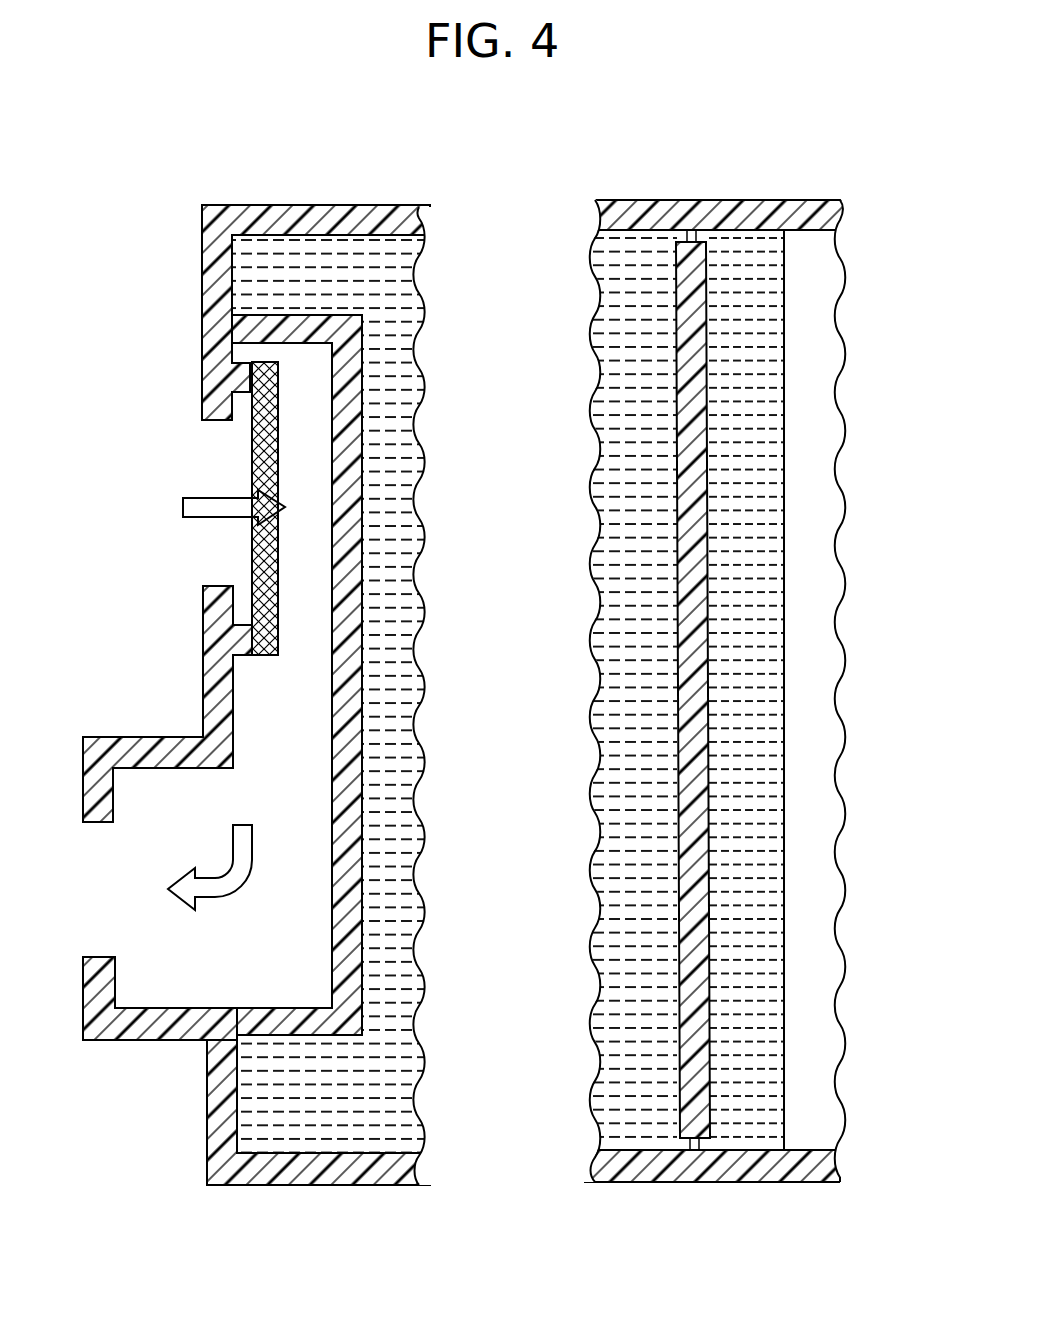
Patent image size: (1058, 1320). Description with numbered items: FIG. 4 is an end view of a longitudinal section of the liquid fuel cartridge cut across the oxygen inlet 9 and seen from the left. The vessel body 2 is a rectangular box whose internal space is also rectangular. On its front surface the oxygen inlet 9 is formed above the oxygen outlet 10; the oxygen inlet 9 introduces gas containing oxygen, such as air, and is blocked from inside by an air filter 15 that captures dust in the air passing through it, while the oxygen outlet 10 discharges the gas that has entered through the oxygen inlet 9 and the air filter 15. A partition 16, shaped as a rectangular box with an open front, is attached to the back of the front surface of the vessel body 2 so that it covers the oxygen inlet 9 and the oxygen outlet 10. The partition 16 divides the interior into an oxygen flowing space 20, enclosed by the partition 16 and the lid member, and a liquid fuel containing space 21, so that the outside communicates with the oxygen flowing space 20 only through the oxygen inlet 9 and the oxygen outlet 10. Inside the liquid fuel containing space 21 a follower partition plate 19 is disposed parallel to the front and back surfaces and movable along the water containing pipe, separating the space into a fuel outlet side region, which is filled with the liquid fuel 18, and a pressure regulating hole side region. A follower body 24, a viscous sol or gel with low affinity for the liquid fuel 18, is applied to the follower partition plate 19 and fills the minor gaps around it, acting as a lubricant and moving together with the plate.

The vessel body 2 is at (224, 215).
The oxygen inlet 9 is at (218, 586).
The oxygen outlet 10 is at (103, 957).
The air filter 15 is at (250, 452).
The partition 16 is at (308, 325).
The liquid fuel 18 is at (413, 464).
The follower partition plate 19 is at (687, 242).
The oxygen flowing space 20 is at (257, 723).
The liquid fuel containing space 21 is at (315, 1127).
The follower body 24 is at (748, 250).